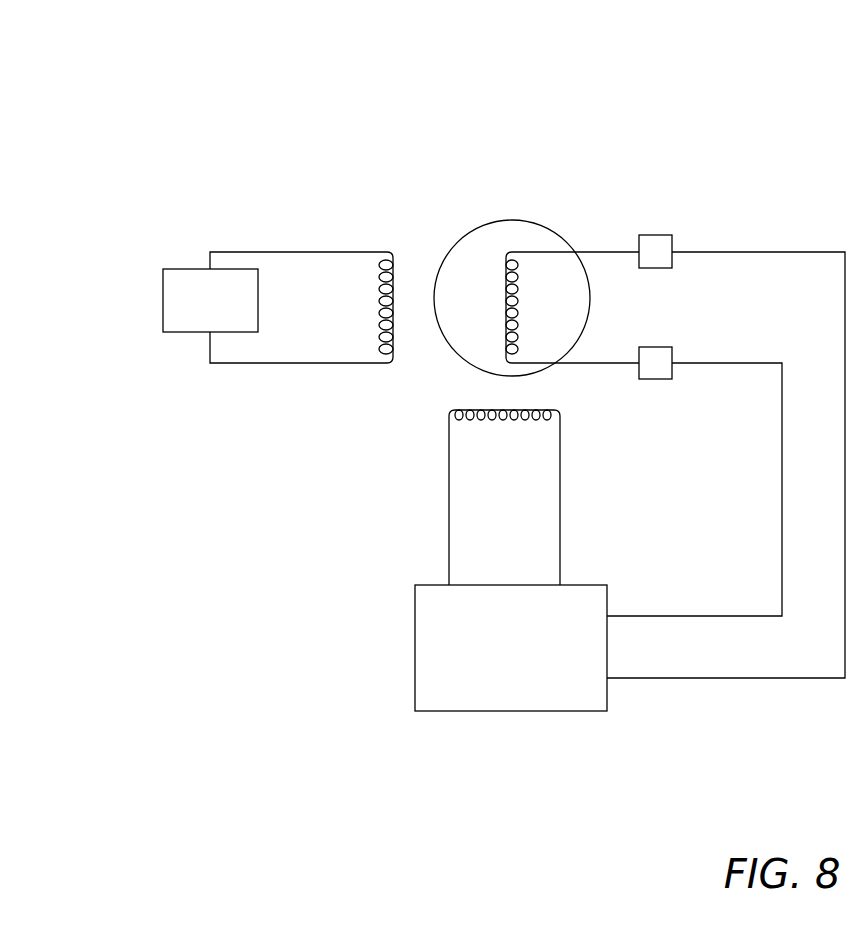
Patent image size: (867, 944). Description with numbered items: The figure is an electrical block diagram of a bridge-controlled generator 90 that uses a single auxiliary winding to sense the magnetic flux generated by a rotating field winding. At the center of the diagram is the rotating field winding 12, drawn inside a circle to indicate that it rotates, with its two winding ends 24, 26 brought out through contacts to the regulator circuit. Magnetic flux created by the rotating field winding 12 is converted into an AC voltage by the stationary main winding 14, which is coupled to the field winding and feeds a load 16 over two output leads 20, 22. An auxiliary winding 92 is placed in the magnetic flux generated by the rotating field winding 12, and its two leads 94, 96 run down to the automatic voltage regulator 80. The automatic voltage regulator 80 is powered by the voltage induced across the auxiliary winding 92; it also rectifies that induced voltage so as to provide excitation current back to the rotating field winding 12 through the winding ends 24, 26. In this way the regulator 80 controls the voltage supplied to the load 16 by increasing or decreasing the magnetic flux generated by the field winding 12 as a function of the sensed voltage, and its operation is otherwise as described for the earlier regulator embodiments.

The generator system 90 is at (610, 142).
The rotating field winding 12 is at (530, 300).
The stationary main winding 14 is at (388, 366).
The load 16 is at (160, 301).
The output lead 20 is at (287, 251).
The output lead 22 is at (270, 365).
The winding end 24 is at (702, 367).
The winding end 26 is at (718, 256).
The automatic voltage regulator 80 is at (557, 714).
The auxiliary winding 92 is at (495, 443).
The coil lead 94 is at (447, 553).
The coil lead 96 is at (563, 507).